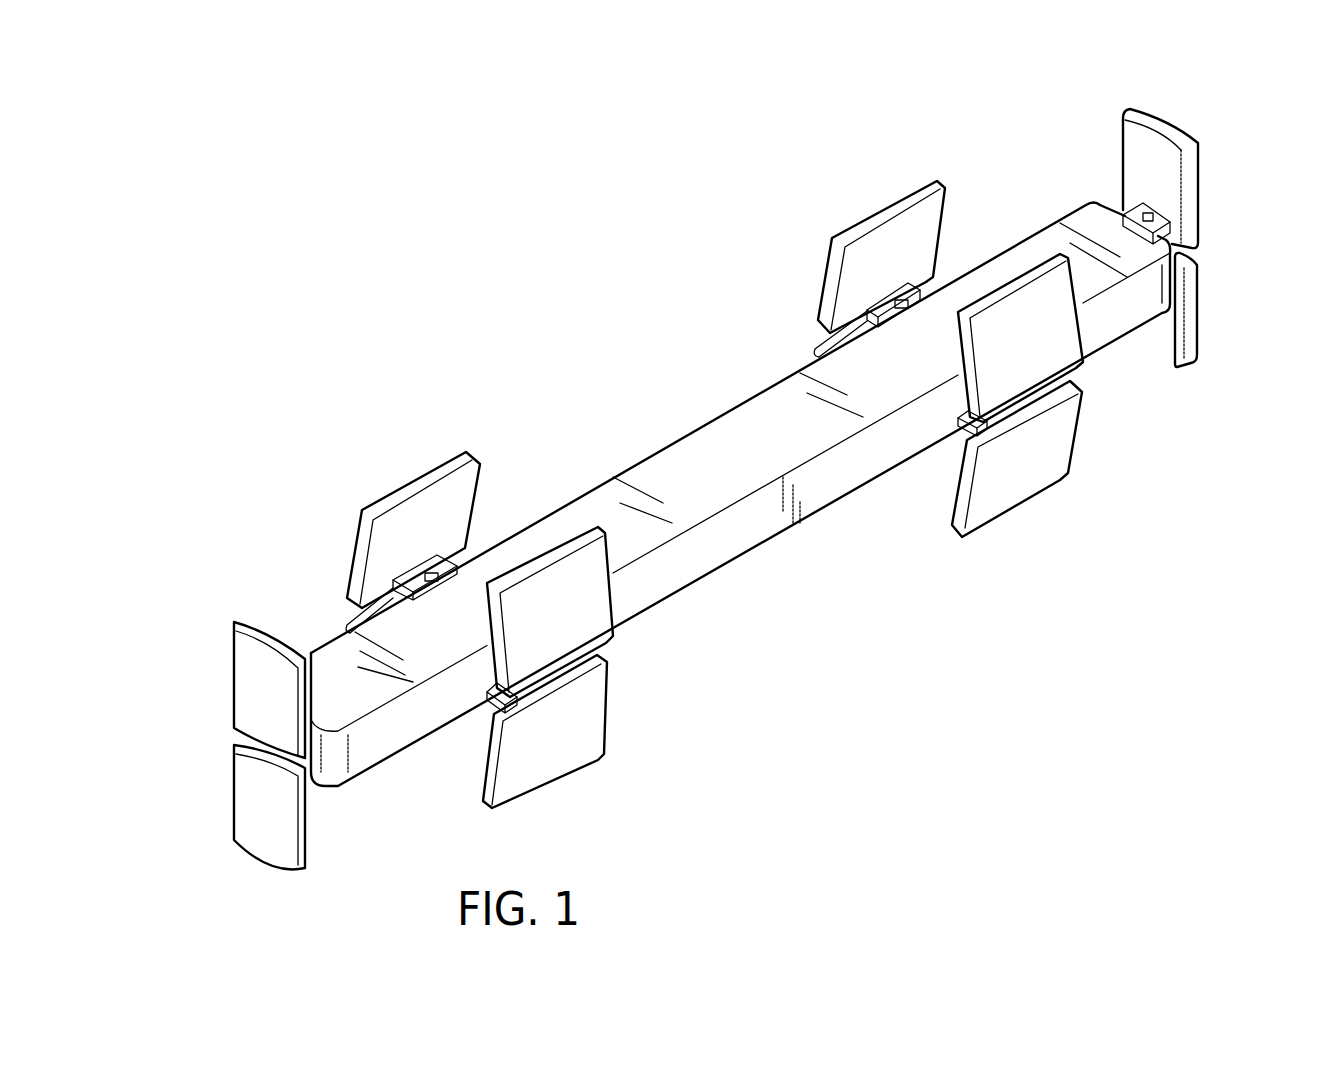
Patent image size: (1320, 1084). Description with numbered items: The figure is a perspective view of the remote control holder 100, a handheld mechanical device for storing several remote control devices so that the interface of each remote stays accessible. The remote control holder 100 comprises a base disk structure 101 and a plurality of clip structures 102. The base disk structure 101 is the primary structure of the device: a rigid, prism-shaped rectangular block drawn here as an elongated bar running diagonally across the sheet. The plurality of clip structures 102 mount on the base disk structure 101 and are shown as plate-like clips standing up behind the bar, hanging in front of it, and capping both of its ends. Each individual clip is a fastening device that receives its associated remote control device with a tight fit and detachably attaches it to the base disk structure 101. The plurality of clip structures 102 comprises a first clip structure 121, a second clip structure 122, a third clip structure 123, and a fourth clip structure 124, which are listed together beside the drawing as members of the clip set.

The remote control holder 100 is at (268, 253).
The base disk structure 101 is at (672, 460).
The plurality of clip structures 102 is at (1234, 713).
The first clip structure 121 is at (520, 590).
The second clip structure 122 is at (1017, 317).
The third clip structure 123 is at (492, 770).
The fourth clip structure 124 is at (1040, 442).